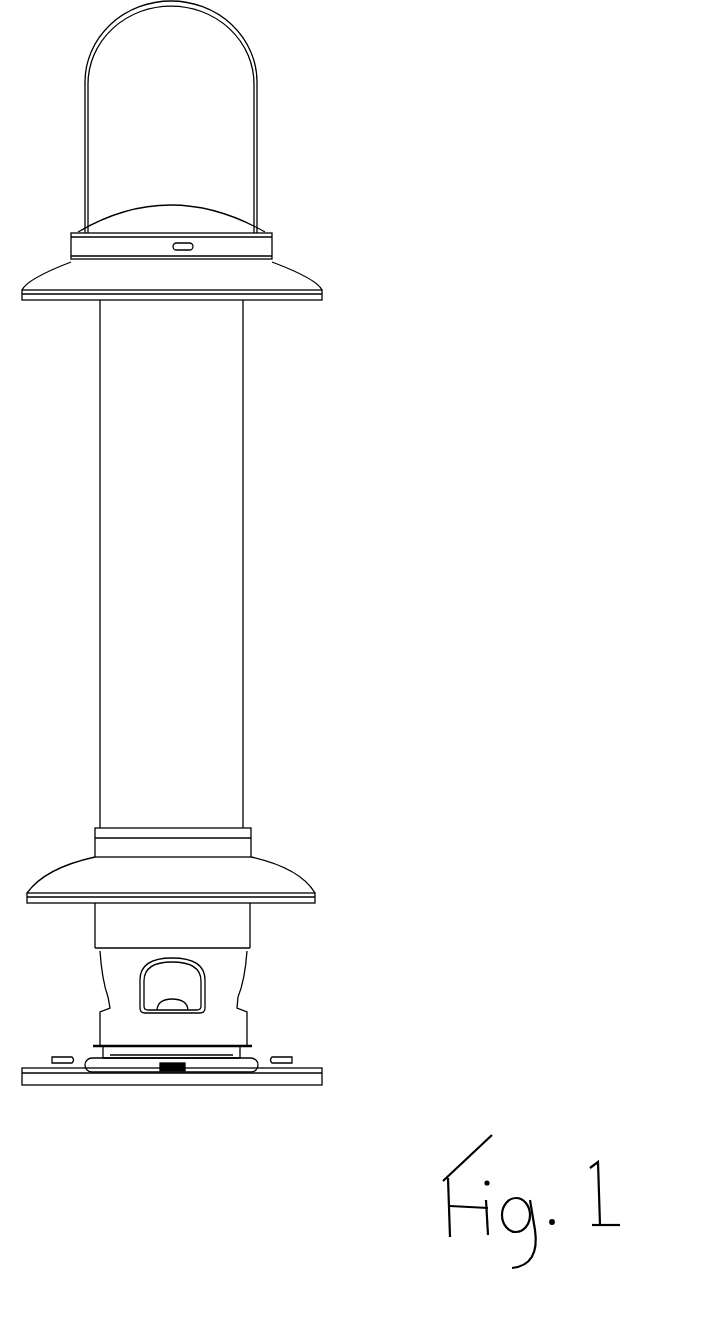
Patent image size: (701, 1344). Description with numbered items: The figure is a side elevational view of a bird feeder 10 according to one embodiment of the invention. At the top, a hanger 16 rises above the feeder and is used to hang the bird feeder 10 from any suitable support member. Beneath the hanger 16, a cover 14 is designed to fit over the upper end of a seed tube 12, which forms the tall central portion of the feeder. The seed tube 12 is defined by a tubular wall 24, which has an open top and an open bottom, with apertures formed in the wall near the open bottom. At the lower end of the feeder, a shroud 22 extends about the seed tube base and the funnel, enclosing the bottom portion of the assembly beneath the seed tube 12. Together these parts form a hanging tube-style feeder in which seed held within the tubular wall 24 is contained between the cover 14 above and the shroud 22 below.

The bird feeder 10 is at (418, 128).
The seed tube 12 is at (247, 519).
The cover 14 is at (348, 268).
The hanger 16 is at (290, 63).
The shroud 22 is at (287, 942).
The tubular wall 24 is at (190, 725).